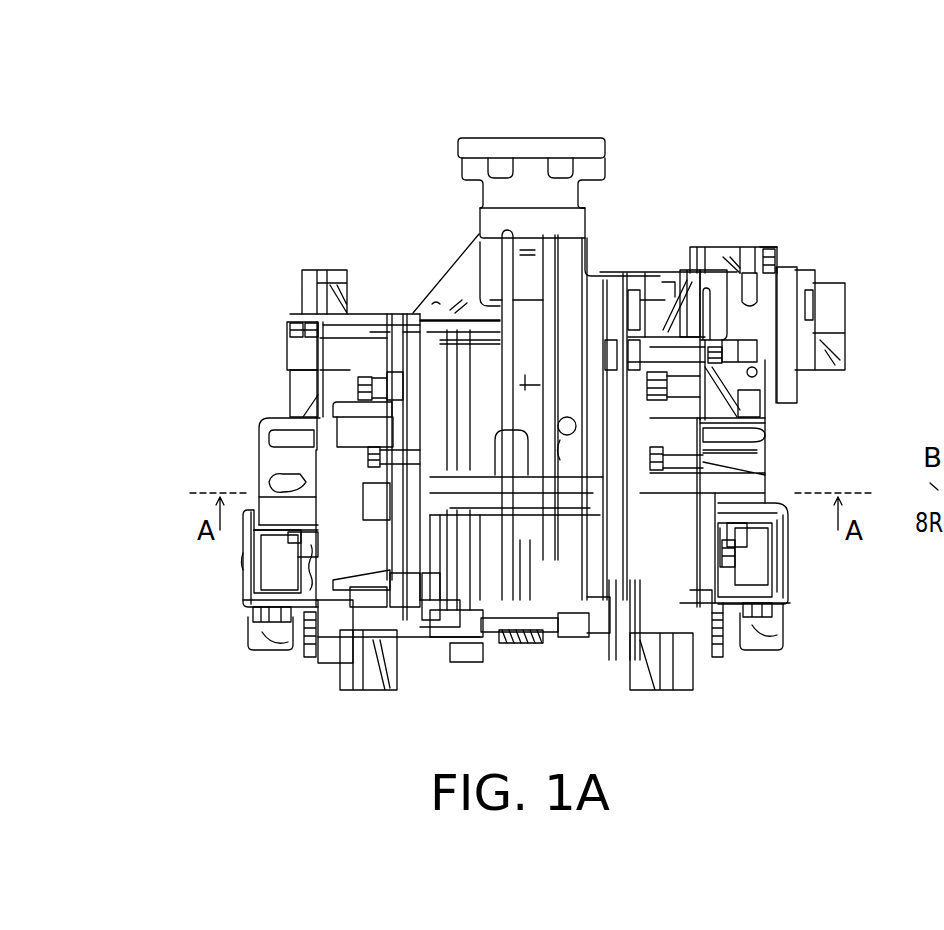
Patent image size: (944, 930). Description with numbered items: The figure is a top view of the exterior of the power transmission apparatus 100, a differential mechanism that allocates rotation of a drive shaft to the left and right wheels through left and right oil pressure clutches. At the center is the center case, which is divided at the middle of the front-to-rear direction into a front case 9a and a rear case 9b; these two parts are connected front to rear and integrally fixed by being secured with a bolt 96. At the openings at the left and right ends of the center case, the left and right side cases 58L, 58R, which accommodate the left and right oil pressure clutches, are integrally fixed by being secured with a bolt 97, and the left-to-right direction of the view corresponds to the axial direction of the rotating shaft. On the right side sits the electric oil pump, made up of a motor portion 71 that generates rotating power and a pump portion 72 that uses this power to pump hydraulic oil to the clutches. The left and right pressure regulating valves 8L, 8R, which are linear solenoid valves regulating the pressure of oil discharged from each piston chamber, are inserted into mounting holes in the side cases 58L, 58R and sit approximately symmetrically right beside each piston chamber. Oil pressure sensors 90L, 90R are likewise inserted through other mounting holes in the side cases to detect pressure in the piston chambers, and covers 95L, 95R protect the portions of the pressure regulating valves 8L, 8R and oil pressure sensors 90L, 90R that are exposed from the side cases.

The power transmission apparatus 100 is at (693, 118).
The front case 9a is at (601, 275).
The rear case 9b is at (549, 635).
The left side case 58L is at (387, 312).
The right side case 58R is at (648, 268).
The pump portion 72 is at (738, 246).
The motor portion 71 is at (850, 302).
The bolt 97 is at (370, 455).
The left pressure regulating valve 8L is at (268, 565).
The right pressure regulating valve 8R is at (775, 560).
The left cover 95L is at (258, 588).
The right cover 95R is at (783, 588).
The left oil pressure sensor 90L is at (272, 645).
The right oil pressure sensor 90R is at (792, 640).
The bolt 96 is at (490, 637).